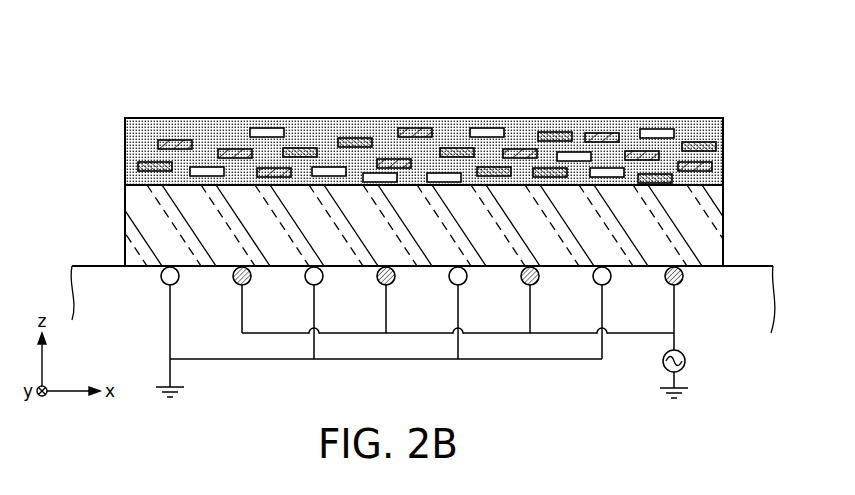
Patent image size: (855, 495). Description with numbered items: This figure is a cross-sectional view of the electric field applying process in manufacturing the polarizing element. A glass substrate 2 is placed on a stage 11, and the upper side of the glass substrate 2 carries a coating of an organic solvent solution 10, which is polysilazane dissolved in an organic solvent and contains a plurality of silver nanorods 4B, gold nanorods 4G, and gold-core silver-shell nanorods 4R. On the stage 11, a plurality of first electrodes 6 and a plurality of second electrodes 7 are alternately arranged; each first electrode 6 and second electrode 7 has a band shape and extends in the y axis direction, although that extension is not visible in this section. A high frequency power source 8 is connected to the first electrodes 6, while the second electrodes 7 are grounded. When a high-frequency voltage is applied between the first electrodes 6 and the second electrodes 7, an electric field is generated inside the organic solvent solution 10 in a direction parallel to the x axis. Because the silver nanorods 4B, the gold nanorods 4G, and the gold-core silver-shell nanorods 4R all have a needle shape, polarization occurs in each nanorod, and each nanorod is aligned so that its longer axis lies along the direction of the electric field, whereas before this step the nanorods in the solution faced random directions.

The glass substrate 2 is at (712, 233).
The gold-core silver-shell nanorods 4R is at (145, 162).
The gold nanorods 4G is at (177, 140).
The silver nanorods 4B is at (270, 128).
The first electrodes 6 is at (683, 280).
The second electrodes 7 is at (161, 279).
The high frequency power source 8 is at (686, 361).
The organic solvent solution 10 is at (318, 130).
The stage 11 is at (95, 266).